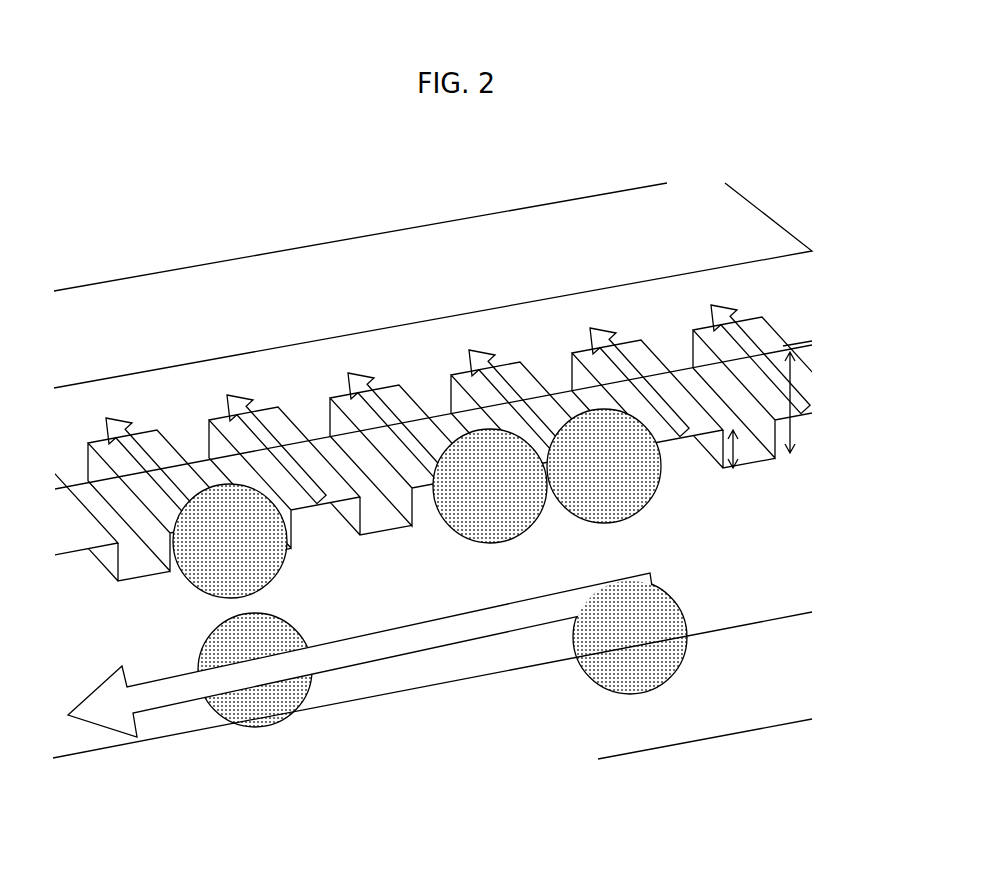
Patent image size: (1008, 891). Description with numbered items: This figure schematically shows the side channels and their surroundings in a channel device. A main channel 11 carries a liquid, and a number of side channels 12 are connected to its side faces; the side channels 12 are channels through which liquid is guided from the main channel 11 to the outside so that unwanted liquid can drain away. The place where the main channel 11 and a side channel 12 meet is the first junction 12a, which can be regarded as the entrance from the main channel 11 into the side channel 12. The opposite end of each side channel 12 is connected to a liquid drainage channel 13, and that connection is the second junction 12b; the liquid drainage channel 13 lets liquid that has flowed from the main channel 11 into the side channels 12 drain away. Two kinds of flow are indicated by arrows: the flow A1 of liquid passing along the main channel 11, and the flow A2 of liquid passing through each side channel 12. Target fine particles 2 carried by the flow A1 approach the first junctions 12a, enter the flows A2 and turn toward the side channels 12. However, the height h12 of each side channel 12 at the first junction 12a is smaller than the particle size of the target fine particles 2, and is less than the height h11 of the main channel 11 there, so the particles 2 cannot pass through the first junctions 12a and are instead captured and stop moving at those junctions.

The target fine particles 2 is at (633, 485).
The main channel 11 is at (773, 693).
The side channel 12 is at (448, 405).
The first junction 12a is at (703, 428).
The second junction 12b is at (633, 342).
The liquid drainage channel 13 is at (440, 272).
The flow A1 is at (183, 693).
The flow A2 is at (745, 345).
The height of the main channel h11 is at (792, 433).
The height of the side channel h12 is at (748, 443).